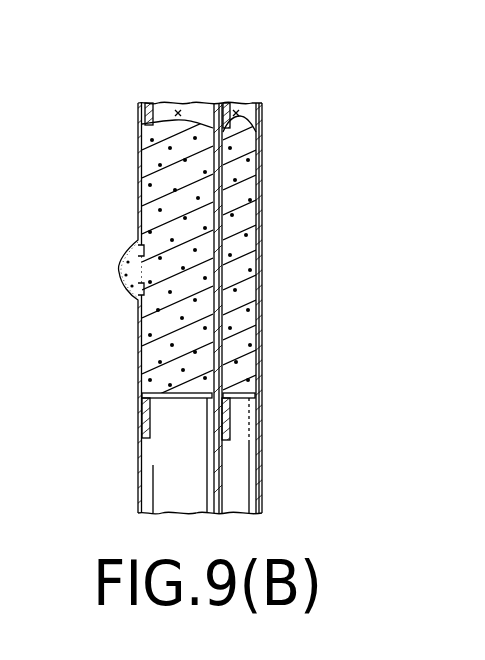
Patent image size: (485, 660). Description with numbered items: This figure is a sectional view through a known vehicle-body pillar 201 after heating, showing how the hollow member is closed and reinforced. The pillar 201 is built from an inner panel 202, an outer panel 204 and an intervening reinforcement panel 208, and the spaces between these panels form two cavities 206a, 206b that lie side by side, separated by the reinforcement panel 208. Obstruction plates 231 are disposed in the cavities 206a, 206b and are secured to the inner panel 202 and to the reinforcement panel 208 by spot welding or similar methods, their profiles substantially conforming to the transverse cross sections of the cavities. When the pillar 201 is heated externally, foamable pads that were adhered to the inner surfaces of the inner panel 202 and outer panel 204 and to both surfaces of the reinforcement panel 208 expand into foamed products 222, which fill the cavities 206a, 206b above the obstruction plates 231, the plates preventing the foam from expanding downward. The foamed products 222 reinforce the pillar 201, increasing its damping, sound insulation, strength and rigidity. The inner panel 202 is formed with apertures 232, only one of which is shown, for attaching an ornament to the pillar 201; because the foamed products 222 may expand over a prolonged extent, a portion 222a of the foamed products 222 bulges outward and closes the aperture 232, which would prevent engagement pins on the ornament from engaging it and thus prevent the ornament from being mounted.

The pillar 201 is at (133, 139).
The inner panel 202 is at (140, 358).
The outer panel 204 is at (262, 240).
The cavity 206a is at (178, 110).
The cavity 206b is at (236, 110).
The reinforcement panel 208 is at (217, 462).
The foamed products 222 is at (140, 178).
The portion of the foamed products 222a is at (125, 253).
The obstruction plates 231 is at (150, 415).
The apertures 232 is at (135, 285).